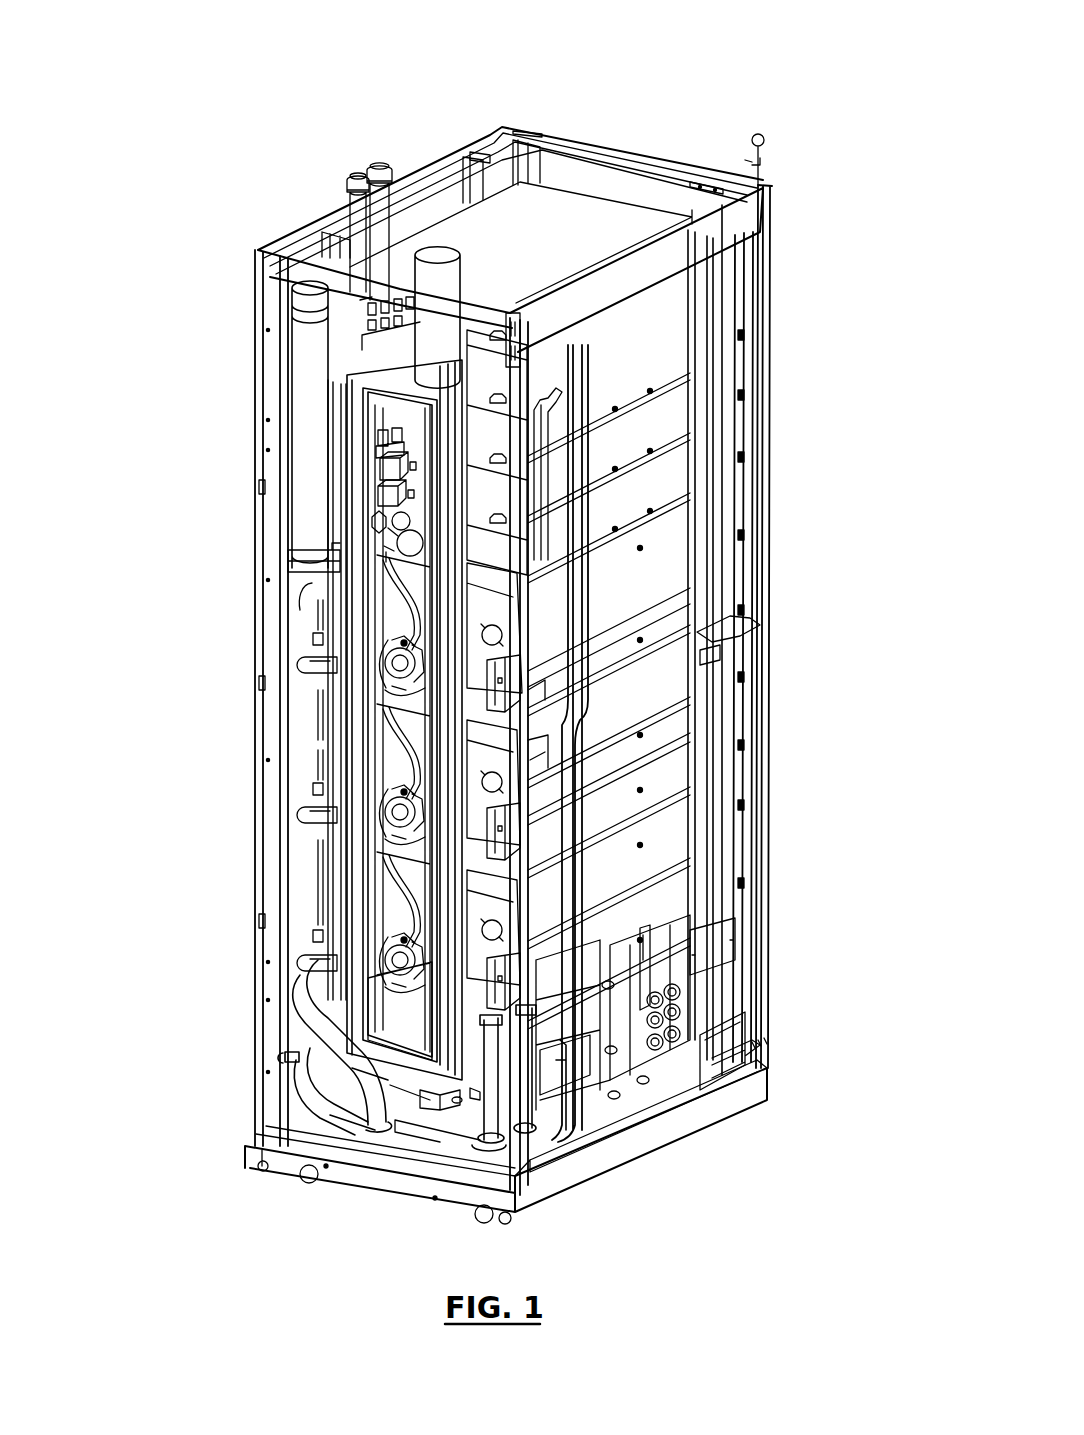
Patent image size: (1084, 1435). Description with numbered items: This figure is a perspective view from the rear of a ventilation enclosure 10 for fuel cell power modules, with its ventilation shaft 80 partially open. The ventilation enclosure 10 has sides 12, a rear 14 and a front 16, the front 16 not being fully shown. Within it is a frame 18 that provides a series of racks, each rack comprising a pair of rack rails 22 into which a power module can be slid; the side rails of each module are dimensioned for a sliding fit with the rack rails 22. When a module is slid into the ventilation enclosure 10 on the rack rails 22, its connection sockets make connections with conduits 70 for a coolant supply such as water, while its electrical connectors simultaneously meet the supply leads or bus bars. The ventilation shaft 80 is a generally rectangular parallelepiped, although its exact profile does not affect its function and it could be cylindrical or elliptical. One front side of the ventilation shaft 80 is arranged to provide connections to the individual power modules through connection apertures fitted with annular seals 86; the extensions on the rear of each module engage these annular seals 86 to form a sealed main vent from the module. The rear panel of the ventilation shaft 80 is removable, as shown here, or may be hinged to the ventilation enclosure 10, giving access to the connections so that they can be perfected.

The ventilation enclosure 10 is at (848, 350).
The sides 12 is at (272, 232).
The rear 14 is at (338, 292).
The front 16 is at (632, 128).
The frame 18 is at (716, 726).
The rack rails 22 is at (618, 818).
The conduits 70 is at (317, 700).
The ventilation shaft 80 is at (357, 920).
The annular seals 86 is at (316, 975).